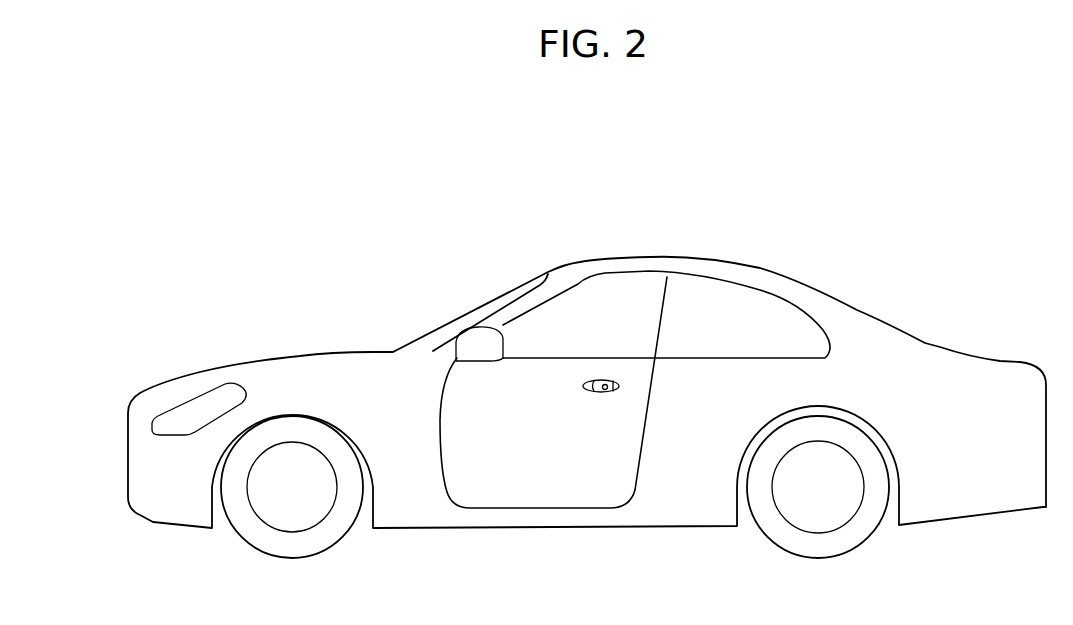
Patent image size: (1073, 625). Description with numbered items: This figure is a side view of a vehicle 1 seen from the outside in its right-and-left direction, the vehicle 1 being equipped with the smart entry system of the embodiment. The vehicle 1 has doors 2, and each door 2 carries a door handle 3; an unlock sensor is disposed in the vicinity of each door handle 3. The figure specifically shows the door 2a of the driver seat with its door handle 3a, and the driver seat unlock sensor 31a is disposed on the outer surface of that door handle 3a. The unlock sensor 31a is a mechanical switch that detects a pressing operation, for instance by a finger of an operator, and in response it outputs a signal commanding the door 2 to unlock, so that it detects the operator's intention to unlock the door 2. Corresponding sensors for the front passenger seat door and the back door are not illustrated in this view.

The vehicle 1 is at (587, 366).
The door 2 is at (553, 350).
The door of the driver seat 2a is at (547, 388).
The door handle 3 is at (568, 485).
The door handle of the door of the driver seat 3a is at (593, 393).
The driver seat unlock sensor 31a is at (605, 392).